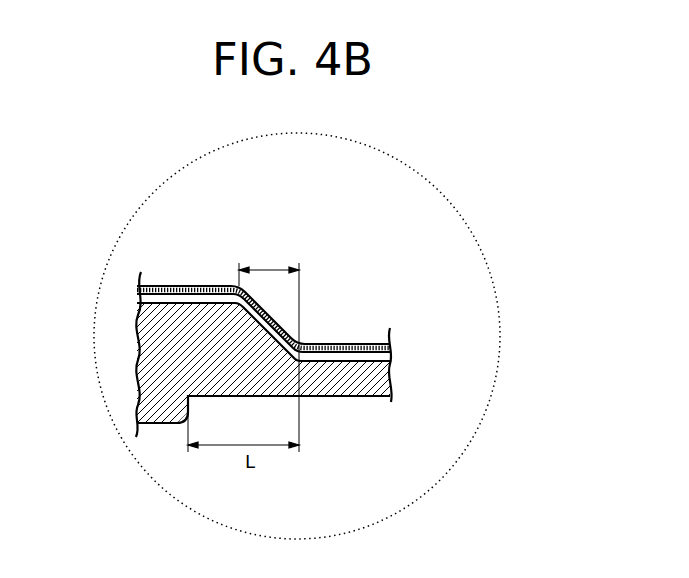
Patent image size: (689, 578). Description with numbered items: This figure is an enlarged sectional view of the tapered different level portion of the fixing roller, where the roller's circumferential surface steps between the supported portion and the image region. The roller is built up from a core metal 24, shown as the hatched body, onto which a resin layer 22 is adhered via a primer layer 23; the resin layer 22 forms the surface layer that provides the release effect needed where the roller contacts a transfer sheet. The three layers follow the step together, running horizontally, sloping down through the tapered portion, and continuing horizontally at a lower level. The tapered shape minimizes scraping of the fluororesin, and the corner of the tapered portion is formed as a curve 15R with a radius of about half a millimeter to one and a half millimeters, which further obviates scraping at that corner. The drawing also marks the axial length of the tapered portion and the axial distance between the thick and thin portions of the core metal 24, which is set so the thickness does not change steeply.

The curve 15R is at (238, 286).
The resin layer 22 is at (350, 343).
The primer layer 23 is at (392, 353).
The core metal 24 is at (391, 380).